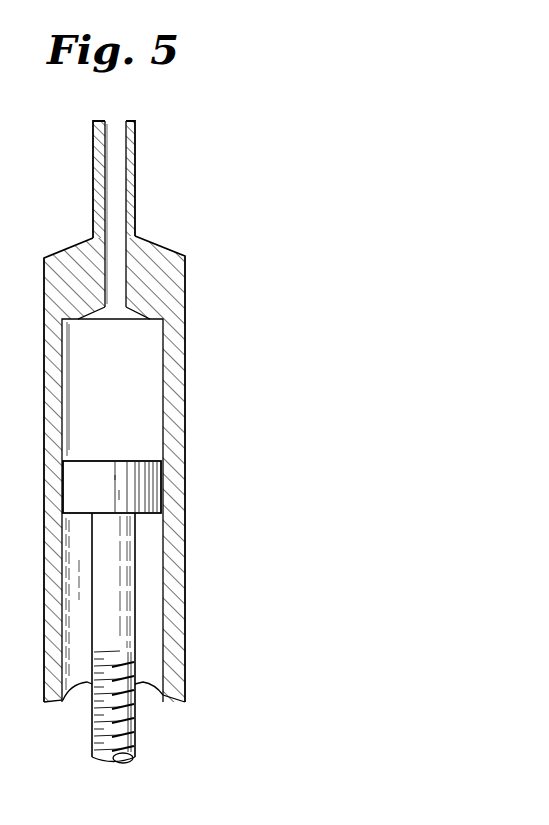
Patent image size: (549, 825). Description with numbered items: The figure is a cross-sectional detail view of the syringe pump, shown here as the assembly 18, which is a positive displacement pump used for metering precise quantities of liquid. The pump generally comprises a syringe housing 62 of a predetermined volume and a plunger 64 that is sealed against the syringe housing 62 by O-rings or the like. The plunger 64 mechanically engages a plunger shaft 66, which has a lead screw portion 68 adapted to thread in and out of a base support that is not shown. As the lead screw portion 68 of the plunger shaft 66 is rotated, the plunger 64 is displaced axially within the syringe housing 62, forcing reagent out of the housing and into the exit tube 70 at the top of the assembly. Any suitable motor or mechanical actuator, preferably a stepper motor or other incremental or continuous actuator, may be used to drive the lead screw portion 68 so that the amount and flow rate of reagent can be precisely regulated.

The syringe assembly 18 is at (232, 319).
The syringe housing 62 is at (177, 537).
The plunger 64 is at (158, 477).
The plunger shaft 66 is at (135, 598).
The lead screw portion 68 is at (132, 733).
The exit tube 70 is at (135, 158).